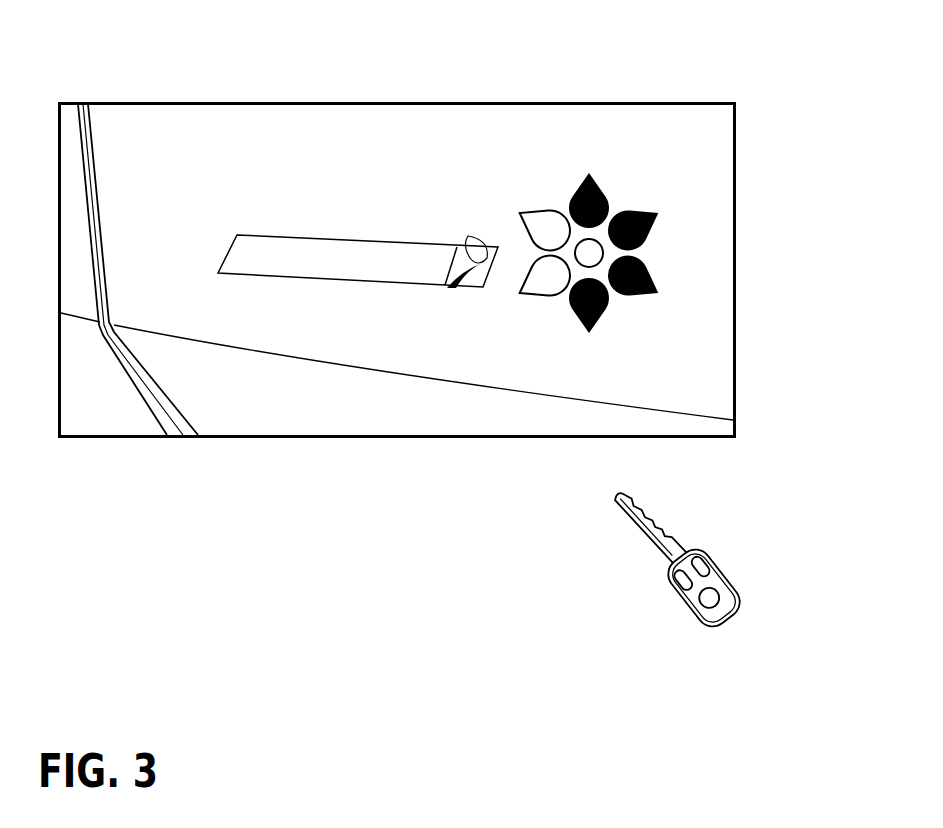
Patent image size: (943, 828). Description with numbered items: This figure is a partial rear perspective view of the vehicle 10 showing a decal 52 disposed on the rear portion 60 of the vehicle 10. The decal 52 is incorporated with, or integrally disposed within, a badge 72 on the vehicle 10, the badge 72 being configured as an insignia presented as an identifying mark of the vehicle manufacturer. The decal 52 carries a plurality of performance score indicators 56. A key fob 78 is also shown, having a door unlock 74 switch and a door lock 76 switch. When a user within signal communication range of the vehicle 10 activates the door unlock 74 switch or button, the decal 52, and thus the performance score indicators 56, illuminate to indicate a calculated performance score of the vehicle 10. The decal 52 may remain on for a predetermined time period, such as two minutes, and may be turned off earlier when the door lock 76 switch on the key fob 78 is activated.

The vehicle 10 is at (167, 123).
The rear portion 60 is at (462, 127).
The badge 72 is at (228, 182).
The decal 52 is at (657, 225).
The performance score indicators 56 is at (640, 210).
The key fob 78 is at (751, 600).
The door unlock switch 74 is at (700, 572).
The door lock switch 76 is at (682, 593).